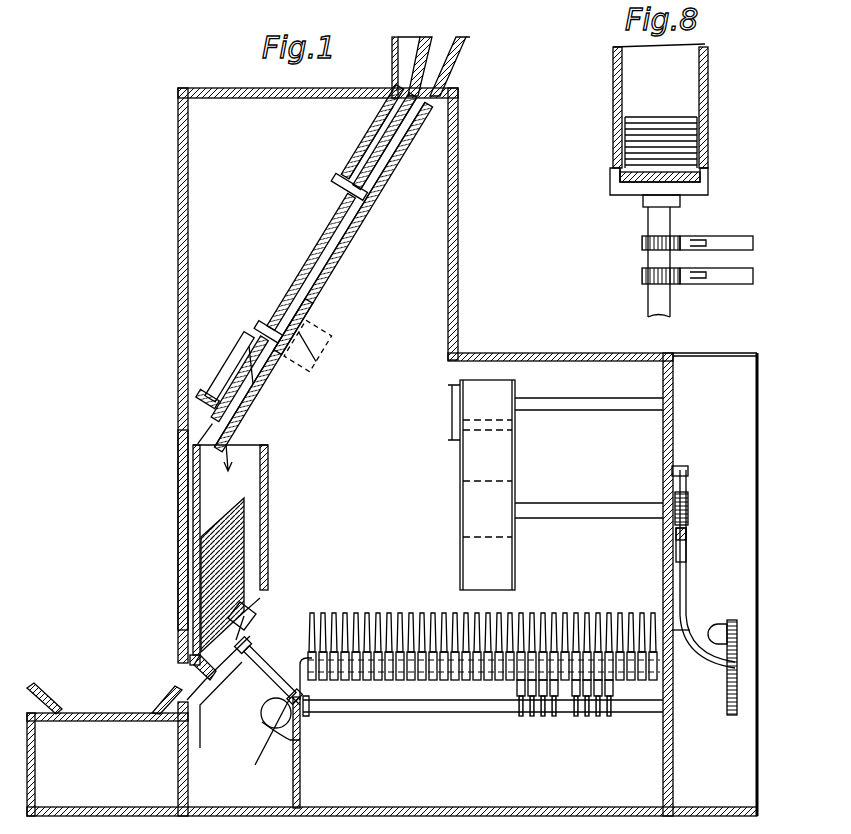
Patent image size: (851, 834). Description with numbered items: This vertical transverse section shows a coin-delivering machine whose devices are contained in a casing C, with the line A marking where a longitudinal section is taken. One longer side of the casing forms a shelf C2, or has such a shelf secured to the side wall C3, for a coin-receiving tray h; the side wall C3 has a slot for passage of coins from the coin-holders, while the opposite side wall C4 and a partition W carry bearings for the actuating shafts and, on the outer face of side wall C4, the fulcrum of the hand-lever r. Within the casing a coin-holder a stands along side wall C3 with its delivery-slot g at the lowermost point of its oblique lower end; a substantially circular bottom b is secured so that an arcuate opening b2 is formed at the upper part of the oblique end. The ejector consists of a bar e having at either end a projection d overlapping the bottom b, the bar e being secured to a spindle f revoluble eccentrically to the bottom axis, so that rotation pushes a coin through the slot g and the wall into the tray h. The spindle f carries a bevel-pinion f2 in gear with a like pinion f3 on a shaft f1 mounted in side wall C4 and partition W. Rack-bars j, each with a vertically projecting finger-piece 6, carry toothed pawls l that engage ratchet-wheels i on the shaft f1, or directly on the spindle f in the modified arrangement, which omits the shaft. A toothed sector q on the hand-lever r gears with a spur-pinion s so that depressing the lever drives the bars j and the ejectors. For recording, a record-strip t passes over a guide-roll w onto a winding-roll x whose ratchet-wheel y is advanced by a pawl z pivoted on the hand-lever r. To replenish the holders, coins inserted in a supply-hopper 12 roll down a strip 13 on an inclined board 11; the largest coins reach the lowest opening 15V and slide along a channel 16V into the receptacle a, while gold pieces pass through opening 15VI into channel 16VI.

In FIG. 1, the section line A is at (200, 86).
In FIG. 1, the casing C is at (178, 243).
In FIG. 1, the shelf C2 is at (107, 764).
In FIG. 1, the side wall C3 is at (178, 539).
In FIG. 1, the side wall C4 is at (715, 584).
In FIG. 1, the partition W is at (300, 770).
In FIG. 1, the board 11 is at (382, 183).
In FIG. 1, the supply-hopper 12 is at (431, 67).
In FIG. 1, the strip 13 is at (342, 198).
In FIG. 1, the lowest opening 15V is at (262, 386).
In FIG. 1, the opening 15VI is at (312, 318).
In FIG. 1, the channel 16V is at (258, 412).
In FIG. 1, the channel 16VI is at (335, 347).
In FIG. 1, the coin-holder a is at (268, 520).
In FIG. 8, the coin-holder a is at (660, 106).
In FIG. 1, the bottom b is at (240, 655).
In FIG. 8, the bottom b is at (630, 190).
In FIG. 1, the arcuate opening b2 is at (250, 606).
In FIG. 1, the projection d is at (258, 616).
In FIG. 8, the projection d is at (612, 182).
In FIG. 1, the ejector bar e is at (248, 645).
In FIG. 8, the ejector bar e is at (688, 193).
In FIG. 1, the ejector-spindle f is at (260, 690).
In FIG. 8, the ejector-spindle f is at (648, 258).
In FIG. 1, the ejector-actuating shaft f1 is at (455, 712).
In FIG. 1, the bevel-pinion f2 is at (262, 722).
In FIG. 1, the bevel-pinion f3 is at (277, 732).
In FIG. 1, the delivery-slot g is at (190, 660).
In FIG. 8, the delivery-slot g is at (614, 168).
In FIG. 1, the coin-receiving tray h is at (125, 713).
In FIG. 1, the finger-piece 6 is at (378, 612).
In FIG. 1, the ratchet-wheel i is at (545, 716).
In FIG. 8, the ratchet-wheel i is at (645, 236).
In FIG. 1, the rack-bar j is at (352, 680).
In FIG. 8, the rack-bar j is at (753, 276).
In FIG. 1, the rack pawl l is at (518, 682).
In FIG. 8, the rack pawl l is at (690, 236).
In FIG. 1, the guide-roll w is at (481, 485).
In FIG. 1, the record-strip t is at (500, 440).
In FIG. 1, the winding-roll x is at (515, 460).
In FIG. 1, the ratchet-wheel y is at (690, 503).
In FIG. 1, the pawl z is at (688, 545).
In FIG. 1, the hand-lever r is at (688, 578).
In FIG. 1, the spur-pinion s is at (732, 620).
In FIG. 1, the toothed sector q is at (726, 700).